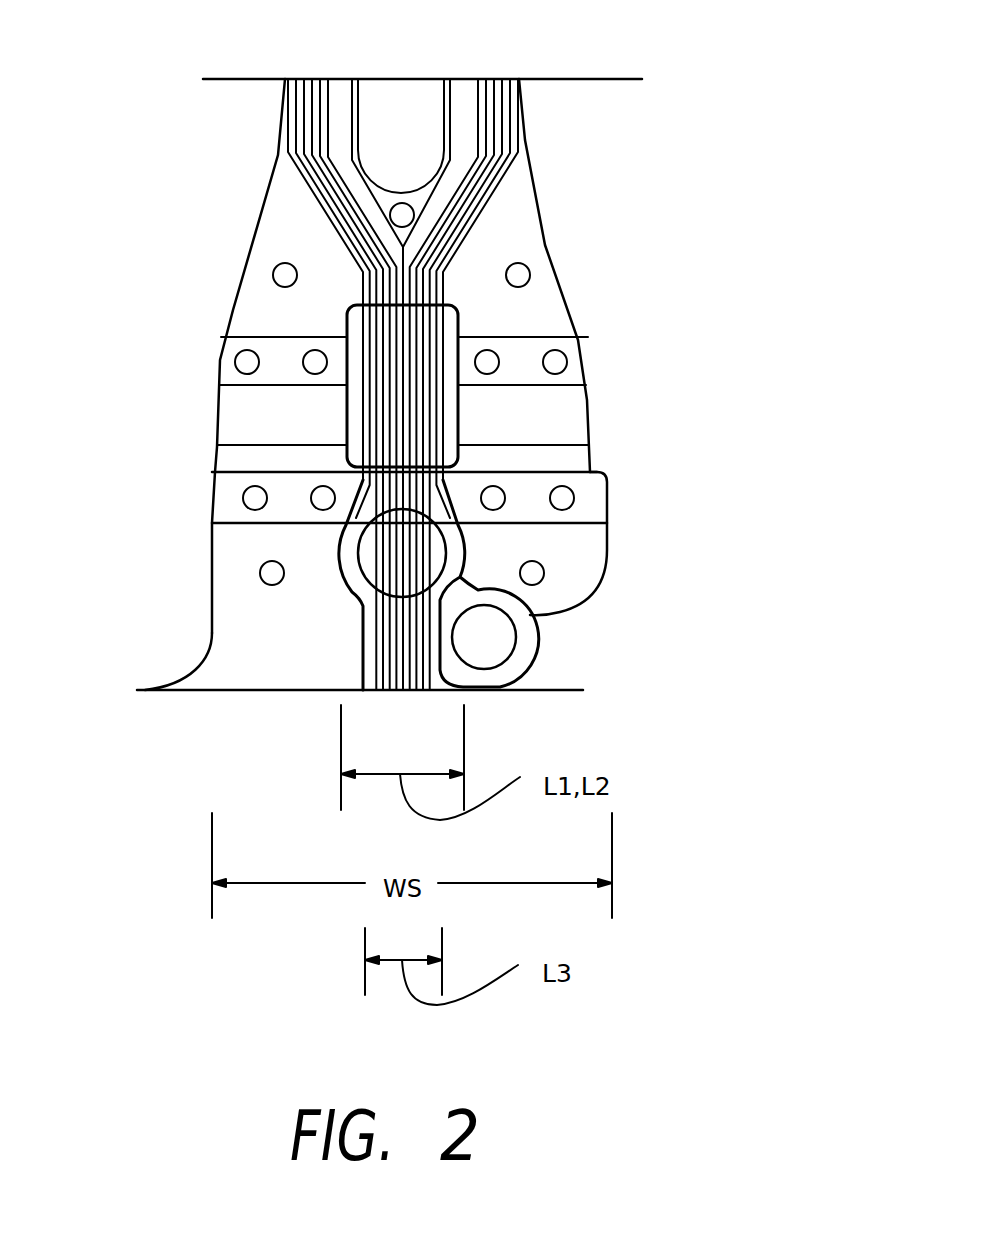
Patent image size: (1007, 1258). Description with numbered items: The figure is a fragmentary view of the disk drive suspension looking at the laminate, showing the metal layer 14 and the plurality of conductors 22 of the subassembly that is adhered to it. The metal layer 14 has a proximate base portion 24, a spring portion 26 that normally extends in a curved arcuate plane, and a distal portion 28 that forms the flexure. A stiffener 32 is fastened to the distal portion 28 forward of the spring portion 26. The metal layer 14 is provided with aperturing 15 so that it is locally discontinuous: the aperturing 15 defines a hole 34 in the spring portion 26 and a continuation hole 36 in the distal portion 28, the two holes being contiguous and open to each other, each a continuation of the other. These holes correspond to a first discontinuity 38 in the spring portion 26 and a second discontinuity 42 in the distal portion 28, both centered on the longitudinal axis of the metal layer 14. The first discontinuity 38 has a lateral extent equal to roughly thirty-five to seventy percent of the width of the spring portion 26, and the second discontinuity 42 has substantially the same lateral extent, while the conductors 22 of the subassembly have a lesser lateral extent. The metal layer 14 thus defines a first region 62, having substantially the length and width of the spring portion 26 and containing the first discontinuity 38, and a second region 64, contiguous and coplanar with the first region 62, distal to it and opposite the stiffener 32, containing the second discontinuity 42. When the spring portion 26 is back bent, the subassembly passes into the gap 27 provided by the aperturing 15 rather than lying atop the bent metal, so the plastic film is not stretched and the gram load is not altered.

The metal layer 14 is at (520, 247).
The aperturing 15 is at (458, 333).
The conductors 22 is at (467, 217).
The base portion 24 is at (238, 662).
The spring portion 26 is at (217, 408).
The gap 27 is at (347, 380).
The distal portion 28 is at (520, 113).
The stiffener 32 is at (259, 234).
The hole 34 is at (458, 453).
The continuation hole 36 is at (458, 368).
The first discontinuity 38 is at (347, 417).
The second discontinuity 42 is at (345, 330).
The first region 62 is at (592, 422).
The second region 64 is at (458, 407).